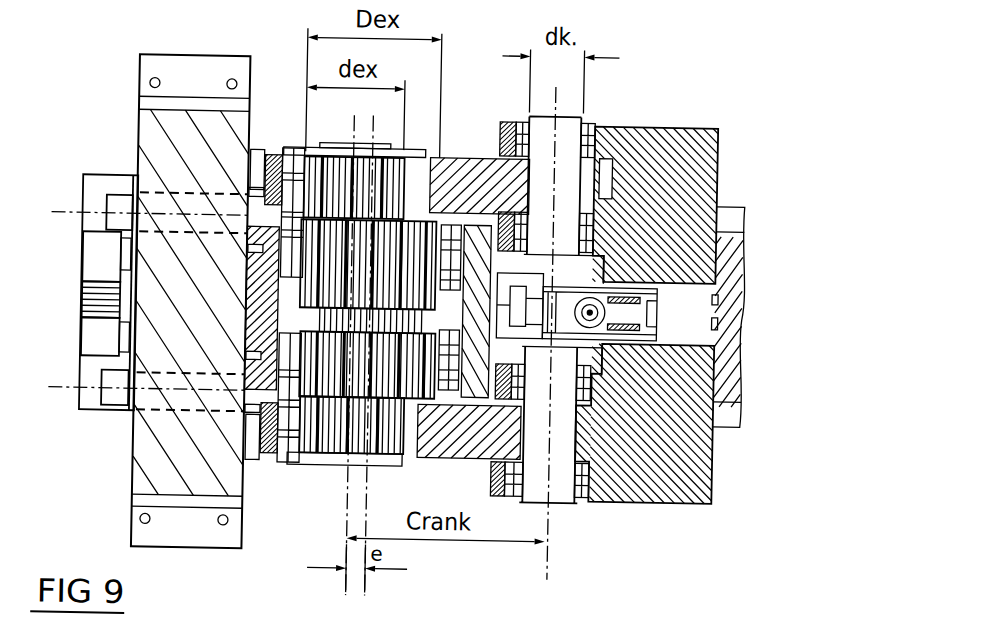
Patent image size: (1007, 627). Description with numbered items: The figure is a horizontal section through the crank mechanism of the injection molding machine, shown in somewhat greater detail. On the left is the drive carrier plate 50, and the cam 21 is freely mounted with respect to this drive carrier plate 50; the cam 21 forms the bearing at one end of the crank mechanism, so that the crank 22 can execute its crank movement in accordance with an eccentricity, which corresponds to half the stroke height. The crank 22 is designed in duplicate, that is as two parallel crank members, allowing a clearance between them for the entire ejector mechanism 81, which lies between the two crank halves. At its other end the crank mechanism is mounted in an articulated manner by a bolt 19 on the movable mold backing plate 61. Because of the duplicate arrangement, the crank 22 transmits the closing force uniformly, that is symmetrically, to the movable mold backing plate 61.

The drive carrier plate 50 is at (177, 57).
The cam 21 is at (326, 479).
The crank 22 is at (463, 158).
The movable mold backing plate 61 is at (654, 118).
The bolt 19 is at (569, 501).
The ejector mechanism 81 is at (690, 301).